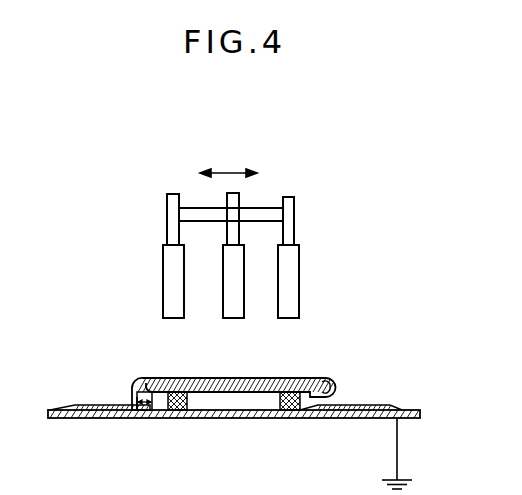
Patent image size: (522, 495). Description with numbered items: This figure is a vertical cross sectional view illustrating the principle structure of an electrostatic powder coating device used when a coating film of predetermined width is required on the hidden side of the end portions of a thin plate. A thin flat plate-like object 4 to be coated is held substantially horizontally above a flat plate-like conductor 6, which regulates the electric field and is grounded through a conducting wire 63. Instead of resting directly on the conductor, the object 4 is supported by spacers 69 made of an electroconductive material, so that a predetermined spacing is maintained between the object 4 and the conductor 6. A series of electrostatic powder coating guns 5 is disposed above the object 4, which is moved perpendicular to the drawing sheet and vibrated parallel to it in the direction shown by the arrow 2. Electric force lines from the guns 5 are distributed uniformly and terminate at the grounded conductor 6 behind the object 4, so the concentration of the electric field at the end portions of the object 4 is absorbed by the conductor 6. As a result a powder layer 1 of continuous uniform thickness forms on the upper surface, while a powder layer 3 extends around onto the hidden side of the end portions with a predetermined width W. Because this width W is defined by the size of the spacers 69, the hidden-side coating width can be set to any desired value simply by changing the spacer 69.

The powder layer 1 is at (180, 378).
The arrow 2 is at (230, 172).
The powder layer 3 is at (332, 397).
The object to be coated 4 is at (293, 392).
The electrostatic powder coating guns 5 is at (300, 275).
The flat plate-like conductor 6 is at (152, 420).
The spacer 69 is at (193, 400).
The conducting wire 63 is at (397, 448).
The width W is at (143, 420).